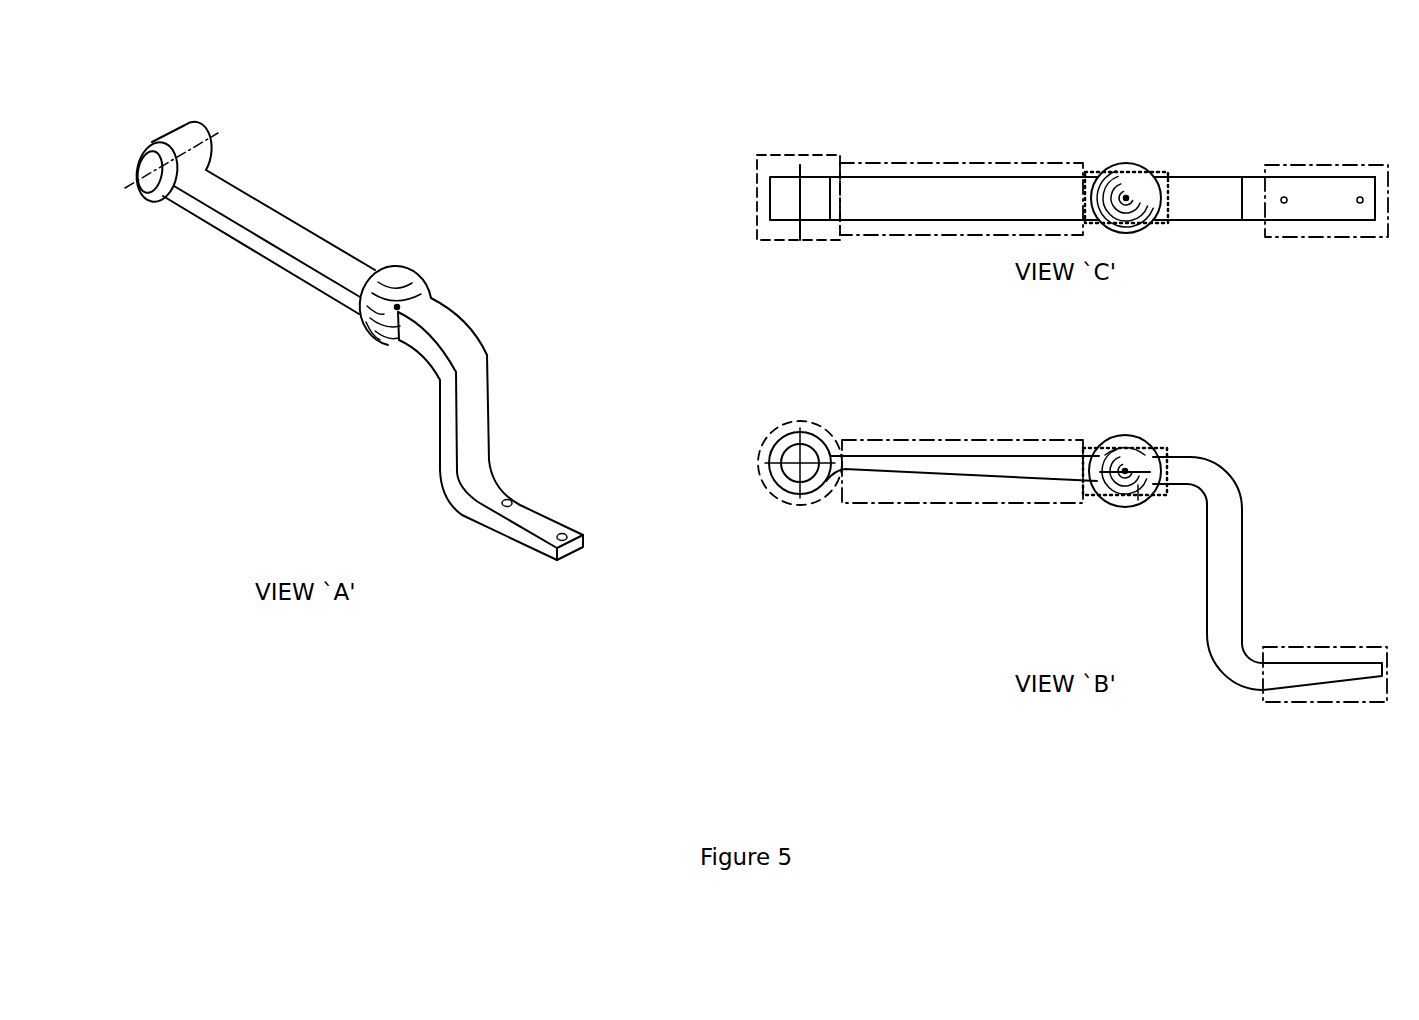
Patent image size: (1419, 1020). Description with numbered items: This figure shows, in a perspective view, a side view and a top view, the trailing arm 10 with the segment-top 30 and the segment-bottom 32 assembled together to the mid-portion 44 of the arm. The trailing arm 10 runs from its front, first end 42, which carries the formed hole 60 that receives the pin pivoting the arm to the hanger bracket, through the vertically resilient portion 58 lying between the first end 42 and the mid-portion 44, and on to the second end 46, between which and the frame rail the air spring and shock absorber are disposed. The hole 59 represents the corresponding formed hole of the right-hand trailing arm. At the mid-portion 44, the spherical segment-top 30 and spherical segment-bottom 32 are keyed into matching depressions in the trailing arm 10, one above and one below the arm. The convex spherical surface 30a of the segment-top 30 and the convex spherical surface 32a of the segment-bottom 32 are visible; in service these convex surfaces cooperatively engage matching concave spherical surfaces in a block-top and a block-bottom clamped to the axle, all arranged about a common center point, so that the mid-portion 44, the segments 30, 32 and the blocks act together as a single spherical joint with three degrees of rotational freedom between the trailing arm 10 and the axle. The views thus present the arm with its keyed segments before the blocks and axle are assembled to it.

The trailing arm 10 is at (1104, 573).
The segment-top 30 is at (734, 332).
The convex spherical surface of segment-top 30a is at (795, 332).
The segment-bottom 32 is at (727, 468).
The convex spherical surface of segment-bottom 32a is at (706, 473).
The first end 42 is at (765, 330).
The mid-portion 44 is at (1188, 333).
The second end 46 is at (1315, 433).
The vertically resilient portion 58 is at (1102, 333).
The hole 59 is at (815, 369).
The formed hole 60 is at (833, 401).